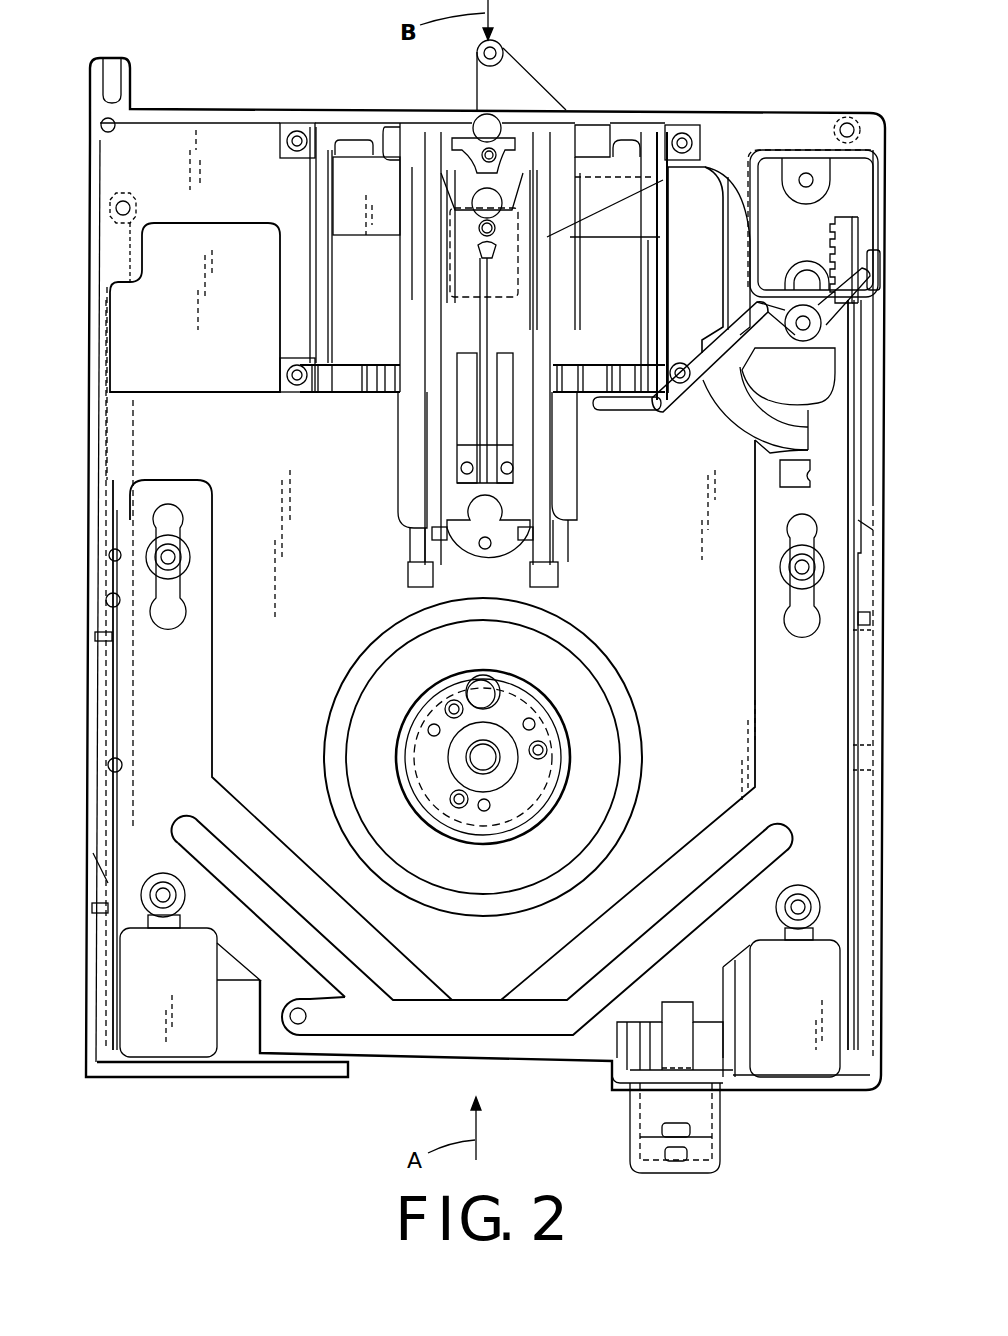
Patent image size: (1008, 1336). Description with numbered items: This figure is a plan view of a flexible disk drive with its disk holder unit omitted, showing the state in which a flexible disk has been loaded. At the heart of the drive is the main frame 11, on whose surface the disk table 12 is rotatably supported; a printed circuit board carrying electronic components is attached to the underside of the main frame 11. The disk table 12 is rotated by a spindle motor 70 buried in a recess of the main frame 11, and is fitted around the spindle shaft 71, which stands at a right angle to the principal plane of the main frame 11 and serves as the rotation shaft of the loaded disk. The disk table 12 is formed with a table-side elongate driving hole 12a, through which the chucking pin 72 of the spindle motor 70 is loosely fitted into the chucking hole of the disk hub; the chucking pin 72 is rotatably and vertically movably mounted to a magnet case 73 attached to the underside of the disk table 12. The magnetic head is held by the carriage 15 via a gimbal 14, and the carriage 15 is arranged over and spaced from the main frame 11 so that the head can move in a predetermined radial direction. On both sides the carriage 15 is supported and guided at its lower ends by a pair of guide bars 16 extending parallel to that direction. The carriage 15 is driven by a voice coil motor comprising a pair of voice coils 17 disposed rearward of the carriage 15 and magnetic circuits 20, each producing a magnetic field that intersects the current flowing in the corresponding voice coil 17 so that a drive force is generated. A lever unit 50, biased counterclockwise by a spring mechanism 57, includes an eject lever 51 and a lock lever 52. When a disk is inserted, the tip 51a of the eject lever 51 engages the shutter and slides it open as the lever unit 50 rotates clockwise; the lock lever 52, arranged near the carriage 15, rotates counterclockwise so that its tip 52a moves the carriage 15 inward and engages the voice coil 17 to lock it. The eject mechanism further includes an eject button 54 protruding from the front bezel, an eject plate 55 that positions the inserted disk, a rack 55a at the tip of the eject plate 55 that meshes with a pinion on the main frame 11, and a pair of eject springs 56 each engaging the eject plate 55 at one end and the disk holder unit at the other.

The main frame 11 is at (248, 1080).
The disk table 12 is at (535, 724).
The table-side elongate driving hole 12a is at (463, 688).
The gimbal 14 is at (507, 490).
The carriage 15 is at (513, 433).
The guide bars 16 is at (400, 489).
The voice coils 17 is at (367, 237).
The magnetic circuits 20 is at (337, 400).
The lever unit 50 is at (717, 310).
The eject lever 51 is at (688, 393).
The tip of the eject lever 51a is at (592, 410).
The lock lever 52 is at (707, 172).
The tip of the lock lever 52a is at (650, 150).
The eject button 54 is at (677, 1173).
The eject plate 55 is at (773, 697).
The rack 55a is at (825, 208).
The eject springs 56 is at (93, 637).
The spring mechanism 57 is at (788, 350).
The spindle motor 70 is at (315, 723).
The spindle shaft 71 is at (488, 755).
The chucking pin 72 is at (490, 683).
The magnet case 73 is at (483, 867).